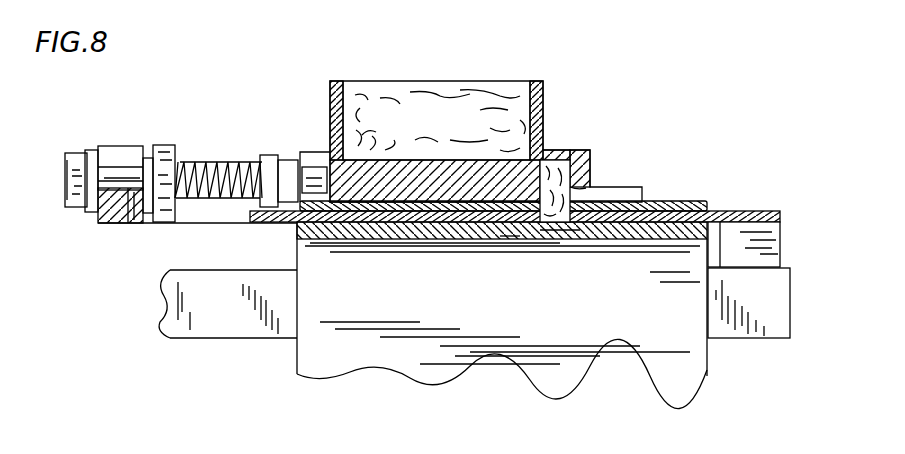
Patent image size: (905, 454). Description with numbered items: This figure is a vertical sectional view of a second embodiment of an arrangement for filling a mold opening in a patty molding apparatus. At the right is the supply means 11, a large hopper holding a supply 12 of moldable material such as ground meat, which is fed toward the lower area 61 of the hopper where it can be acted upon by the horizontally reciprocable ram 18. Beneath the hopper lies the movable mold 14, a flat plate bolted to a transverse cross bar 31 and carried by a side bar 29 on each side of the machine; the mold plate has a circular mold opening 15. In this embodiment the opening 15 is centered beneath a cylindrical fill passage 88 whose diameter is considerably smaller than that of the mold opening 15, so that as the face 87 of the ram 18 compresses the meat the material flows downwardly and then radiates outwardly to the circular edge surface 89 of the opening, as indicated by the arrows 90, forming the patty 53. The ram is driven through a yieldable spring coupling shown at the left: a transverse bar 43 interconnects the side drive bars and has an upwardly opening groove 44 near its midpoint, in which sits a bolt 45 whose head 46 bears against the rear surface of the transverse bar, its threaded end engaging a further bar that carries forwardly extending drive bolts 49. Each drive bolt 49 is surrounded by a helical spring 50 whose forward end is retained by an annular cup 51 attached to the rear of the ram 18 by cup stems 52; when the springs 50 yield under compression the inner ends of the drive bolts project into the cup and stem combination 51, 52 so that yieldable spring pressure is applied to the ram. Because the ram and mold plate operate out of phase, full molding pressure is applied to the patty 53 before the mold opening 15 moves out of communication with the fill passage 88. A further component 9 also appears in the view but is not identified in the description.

The shaft strip 9 is at (485, 199).
The supply means 11 is at (540, 84).
The supply of moldable material 12 is at (397, 80).
The movable mold 14 is at (652, 244).
The mold opening 15 is at (587, 228).
The ram 18 is at (384, 122).
The side bar 29 is at (227, 303).
The transverse cross bar 31 is at (770, 252).
The transverse bar 43 is at (107, 225).
The upwardly opening groove 44 is at (118, 148).
The bolt 45 is at (130, 225).
The head 46 is at (96, 152).
The drive bolts 49 is at (196, 165).
The helical spring 50 is at (218, 165).
The cup 51 is at (268, 155).
The cup stems 52 is at (312, 180).
The patty 53 is at (517, 226).
The lower area of the hopper 61 is at (462, 131).
The face of the ram 87 is at (546, 168).
The cylindrical fill passage 88 is at (590, 186).
The circular edge surface 89 is at (500, 237).
The arrows 90 is at (564, 214).